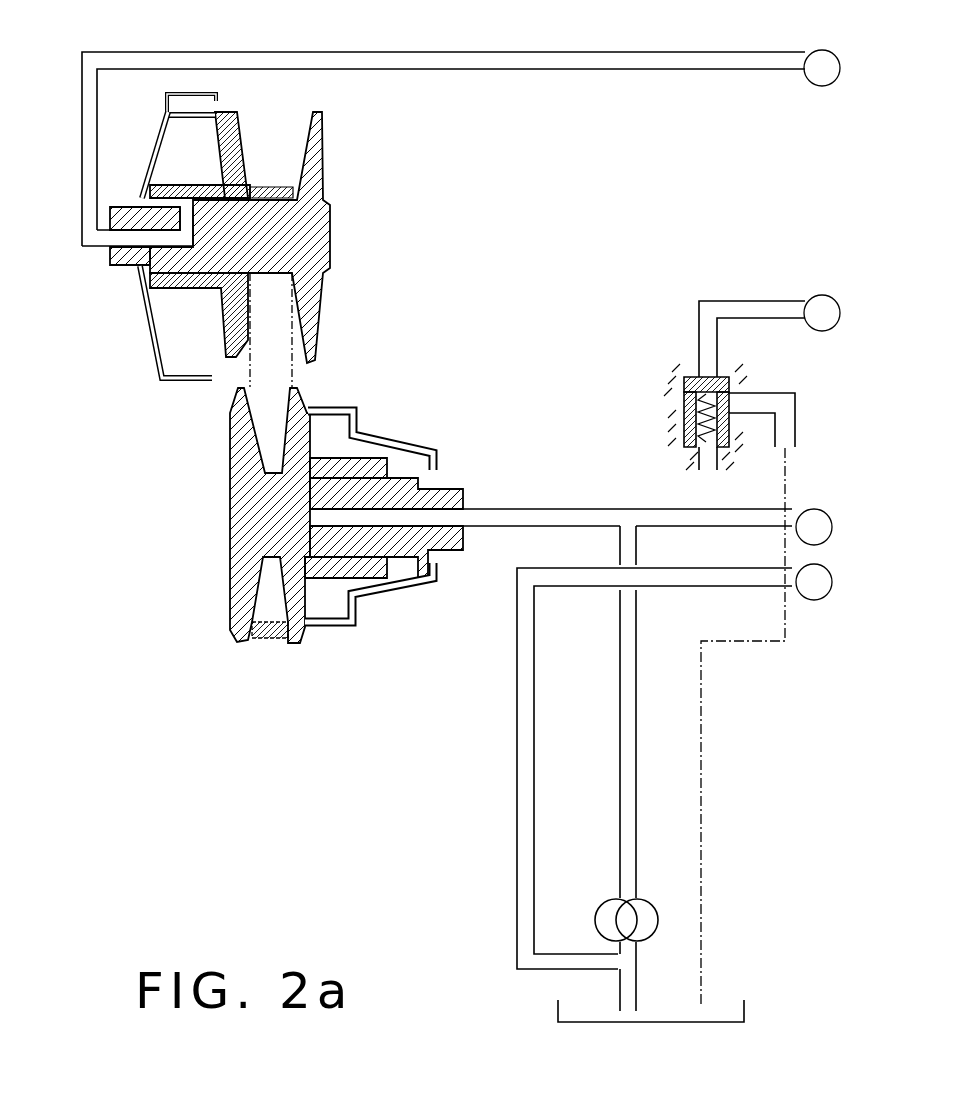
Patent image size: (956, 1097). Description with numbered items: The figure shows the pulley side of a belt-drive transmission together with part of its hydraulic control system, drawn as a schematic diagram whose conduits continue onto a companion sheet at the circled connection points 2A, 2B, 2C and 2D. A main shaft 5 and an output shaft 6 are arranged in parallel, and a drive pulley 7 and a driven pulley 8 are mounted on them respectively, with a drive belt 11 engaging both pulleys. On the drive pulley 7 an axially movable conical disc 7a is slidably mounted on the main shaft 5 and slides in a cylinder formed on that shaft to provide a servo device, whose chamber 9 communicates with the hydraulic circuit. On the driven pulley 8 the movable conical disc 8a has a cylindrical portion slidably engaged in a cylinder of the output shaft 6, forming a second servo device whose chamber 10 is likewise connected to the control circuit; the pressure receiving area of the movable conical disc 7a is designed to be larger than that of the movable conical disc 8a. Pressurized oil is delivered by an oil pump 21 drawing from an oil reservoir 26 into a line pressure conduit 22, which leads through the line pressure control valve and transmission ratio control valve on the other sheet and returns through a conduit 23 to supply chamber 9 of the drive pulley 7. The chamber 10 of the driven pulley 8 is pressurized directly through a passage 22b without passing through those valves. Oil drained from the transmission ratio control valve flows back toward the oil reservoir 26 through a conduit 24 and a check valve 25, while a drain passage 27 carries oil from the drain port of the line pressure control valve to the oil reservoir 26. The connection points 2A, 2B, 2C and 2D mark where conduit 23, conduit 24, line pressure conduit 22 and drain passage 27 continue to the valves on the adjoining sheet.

The main shaft 5 is at (133, 267).
The output shaft 6 is at (453, 490).
The drive pulley 7 is at (338, 139).
The movable conical disc 7a is at (236, 133).
The driven pulley 8 is at (220, 553).
The movable conical disc 8a is at (288, 442).
The chamber 9 is at (176, 159).
The chamber 10 is at (400, 568).
The drive belt 11 is at (272, 640).
The oil pump 21 is at (645, 912).
The line pressure conduit 22 is at (754, 509).
The passage 22b is at (598, 478).
The conduit 23 is at (636, 52).
The conduit 24 is at (758, 301).
The check valve 25 is at (683, 413).
The oil reservoir 26 is at (746, 1012).
The drain passage 27 is at (672, 590).
The connection point to FIG. 2b 2A is at (822, 68).
The connection point to FIG. 2b 2B is at (822, 313).
The connection point to FIG. 2b 2C is at (814, 527).
The connection point to FIG. 2b 2D is at (814, 582).